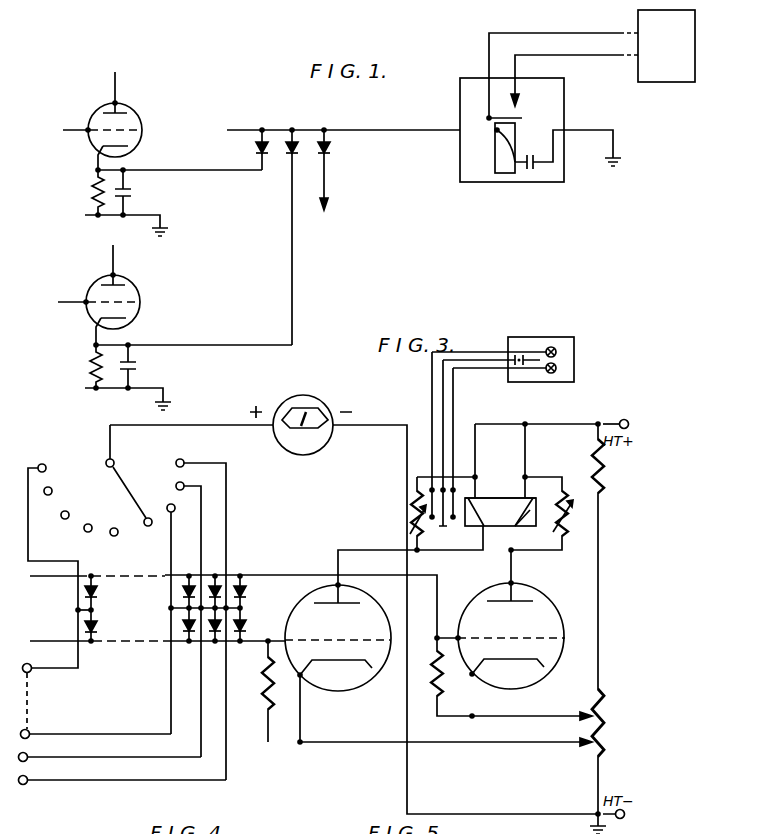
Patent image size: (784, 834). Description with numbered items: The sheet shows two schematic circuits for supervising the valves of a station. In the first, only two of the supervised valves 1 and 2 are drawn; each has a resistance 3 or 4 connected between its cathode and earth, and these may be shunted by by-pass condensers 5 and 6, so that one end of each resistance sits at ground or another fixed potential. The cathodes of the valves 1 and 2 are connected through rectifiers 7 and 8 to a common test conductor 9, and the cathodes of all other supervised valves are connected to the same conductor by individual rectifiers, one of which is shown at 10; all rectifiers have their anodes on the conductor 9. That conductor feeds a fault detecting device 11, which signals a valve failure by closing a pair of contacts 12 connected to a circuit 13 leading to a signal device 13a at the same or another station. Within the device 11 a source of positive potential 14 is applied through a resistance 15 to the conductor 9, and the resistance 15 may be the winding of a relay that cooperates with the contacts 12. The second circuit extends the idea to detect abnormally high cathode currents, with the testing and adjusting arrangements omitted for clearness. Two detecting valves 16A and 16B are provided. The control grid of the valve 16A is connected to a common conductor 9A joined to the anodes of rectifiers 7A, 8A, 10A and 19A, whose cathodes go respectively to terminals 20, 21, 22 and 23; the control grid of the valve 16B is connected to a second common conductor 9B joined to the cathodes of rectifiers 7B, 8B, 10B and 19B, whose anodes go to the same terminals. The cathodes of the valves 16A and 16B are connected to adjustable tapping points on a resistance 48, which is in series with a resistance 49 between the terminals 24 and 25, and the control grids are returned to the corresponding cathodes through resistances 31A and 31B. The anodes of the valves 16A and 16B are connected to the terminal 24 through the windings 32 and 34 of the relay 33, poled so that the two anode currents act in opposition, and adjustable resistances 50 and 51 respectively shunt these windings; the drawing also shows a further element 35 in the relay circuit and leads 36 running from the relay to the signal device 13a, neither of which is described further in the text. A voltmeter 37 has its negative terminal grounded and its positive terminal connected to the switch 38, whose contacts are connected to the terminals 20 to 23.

In FIG. 1, the valve 1 is at (131, 108).
In FIG. 1, the valve 2 is at (129, 284).
In FIG. 1, the resistance 3 is at (86, 192).
In FIG. 1, the resistance 4 is at (84, 366).
In FIG. 1, the by-pass condenser 5 is at (130, 192).
In FIG. 1, the by-pass condenser 6 is at (135, 366).
In FIG. 1, the rectifier 7 is at (253, 149).
In FIG. 1, the rectifier 8 is at (286, 236).
In FIG. 1, the common test conductor 9 is at (355, 130).
In FIG. 1, the rectifier 10 is at (334, 168).
In FIG. 1, the fault detecting device 11 is at (510, 183).
In FIG. 1, the contacts 12 is at (518, 116).
In FIG. 1, the circuit 13 is at (598, 45).
In FIG. 1, the signal device 13a is at (662, 84).
In FIG. 3, the signal device 13a is at (576, 348).
In FIG. 1, the source of positive potential 14 is at (568, 149).
In FIG. 1, the resistance 15 is at (505, 131).
In FIG. 3, the rectifier 7A is at (243, 592).
In FIG. 3, the rectifier 7B is at (238, 632).
In FIG. 3, the rectifier 8A is at (218, 592).
In FIG. 3, the rectifier 8B is at (212, 632).
In FIG. 3, the common conductor 9A is at (280, 575).
In FIG. 3, the second common conductor 9B is at (268, 641).
In FIG. 3, the rectifier 10A is at (186, 592).
In FIG. 3, the rectifier 10B is at (186, 630).
In FIG. 3, the detecting valve 16A is at (541, 598).
In FIG. 3, the detecting valve 16B is at (376, 606).
In FIG. 3, the rectifier 19A is at (98, 592).
In FIG. 3, the rectifier 19B is at (100, 628).
In FIG. 3, the terminal 20 is at (123, 787).
In FIG. 3, the terminal 21 is at (110, 764).
In FIG. 3, the terminal 22 is at (96, 741).
In FIG. 3, the terminal 23 is at (22, 688).
In FIG. 3, the terminal 24 is at (611, 414).
In FIG. 3, the terminal 25 is at (613, 822).
In FIG. 3, the resistance 31A is at (438, 700).
In FIG. 3, the resistance 31B is at (254, 690).
In FIG. 3, the winding 32 is at (500, 512).
In FIG. 3, the relay 33 is at (498, 498).
In FIG. 3, the winding 34 is at (524, 527).
In FIG. 3, the variable resistor 35 is at (427, 515).
In FIG. 3, the signal device leads 36 is at (446, 385).
In FIG. 3, the voltmeter 37 is at (301, 415).
In FIG. 3, the switch 38 is at (111, 480).
In FIG. 3, the resistance 48 is at (611, 747).
In FIG. 3, the resistance 49 is at (611, 556).
In FIG. 3, the adjustable resistance 50 is at (410, 518).
In FIG. 3, the adjustable resistance 51 is at (571, 515).